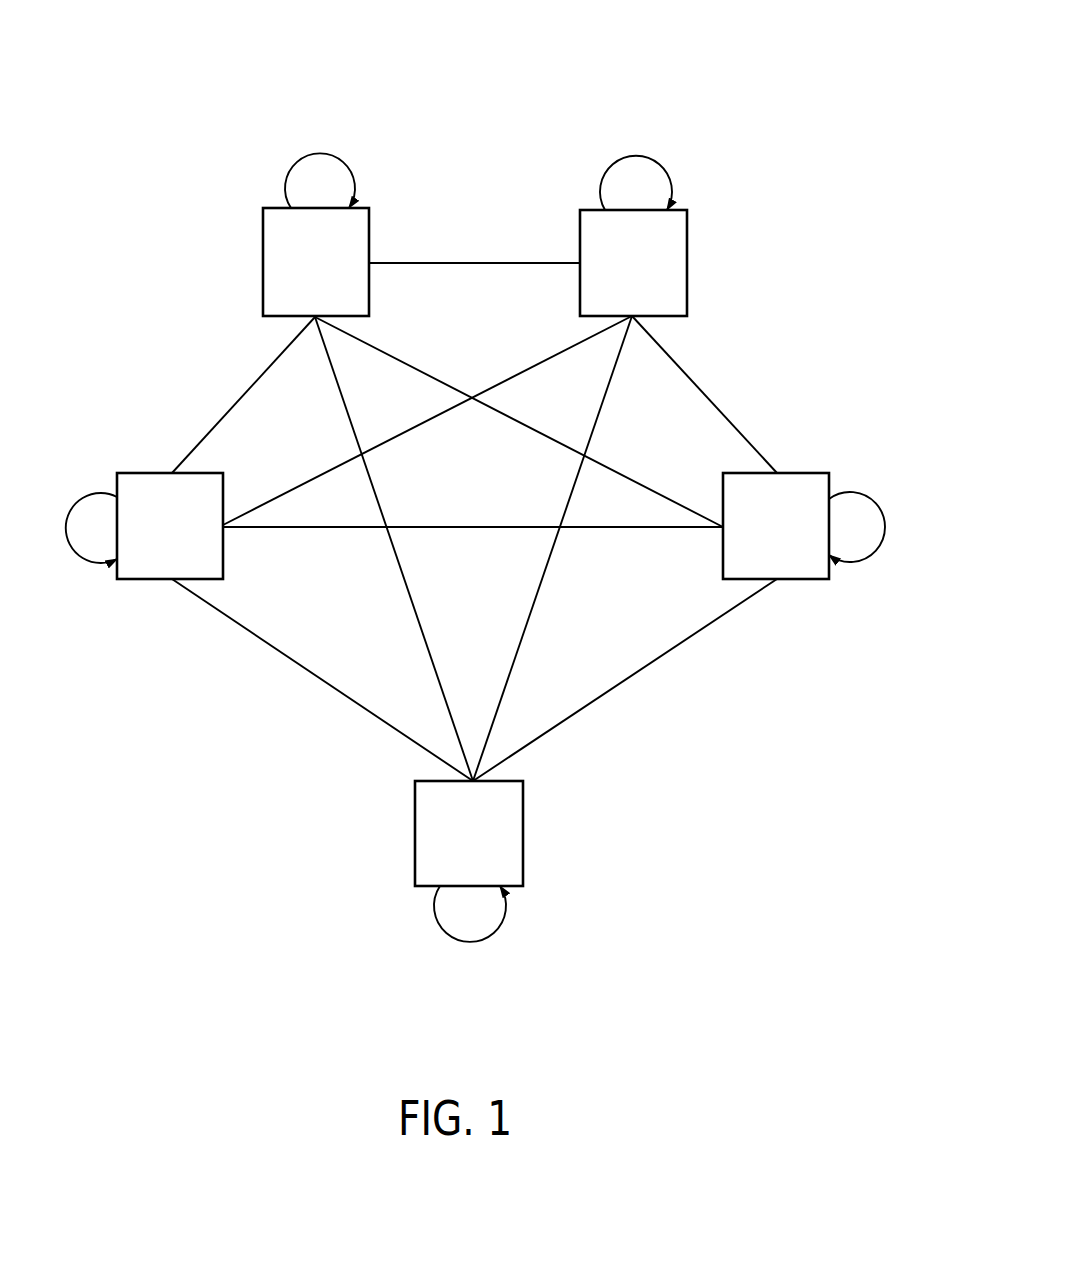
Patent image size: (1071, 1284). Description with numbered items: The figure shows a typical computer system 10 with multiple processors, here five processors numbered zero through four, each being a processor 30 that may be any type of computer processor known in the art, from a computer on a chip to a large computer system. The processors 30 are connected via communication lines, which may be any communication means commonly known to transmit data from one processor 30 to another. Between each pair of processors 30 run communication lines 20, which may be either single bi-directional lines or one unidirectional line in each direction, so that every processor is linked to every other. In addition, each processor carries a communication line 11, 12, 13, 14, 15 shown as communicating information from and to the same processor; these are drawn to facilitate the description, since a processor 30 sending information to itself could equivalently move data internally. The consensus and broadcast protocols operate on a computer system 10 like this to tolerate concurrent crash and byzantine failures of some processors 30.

The computer system 10 is at (695, 147).
The communication line 11 is at (320, 159).
The communication line 12 is at (636, 160).
The communication line 13 is at (876, 527).
The communication line 14 is at (470, 939).
The communication line 15 is at (64, 528).
The communication line 20 is at (455, 263).
The processor 30 is at (263, 268).